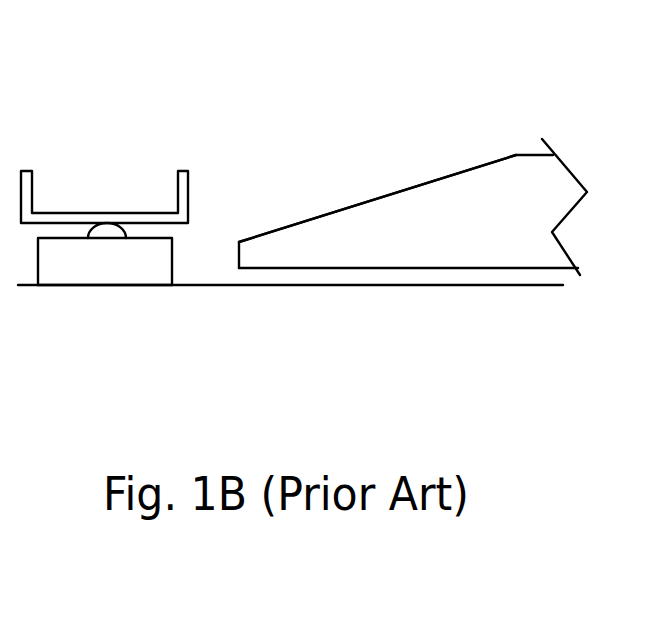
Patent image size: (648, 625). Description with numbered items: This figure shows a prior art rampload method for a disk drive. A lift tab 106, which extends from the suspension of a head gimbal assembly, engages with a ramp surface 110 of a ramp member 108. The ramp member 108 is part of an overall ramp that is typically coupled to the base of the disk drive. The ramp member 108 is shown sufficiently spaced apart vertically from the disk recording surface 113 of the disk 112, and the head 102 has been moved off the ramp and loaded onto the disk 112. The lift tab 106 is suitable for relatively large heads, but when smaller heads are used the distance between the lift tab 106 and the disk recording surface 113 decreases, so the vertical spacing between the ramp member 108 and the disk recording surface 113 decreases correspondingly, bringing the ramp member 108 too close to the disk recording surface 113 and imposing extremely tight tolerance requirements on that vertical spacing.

The head 102 is at (53, 268).
The lift tab 106 is at (140, 212).
The ramp member 108 is at (425, 218).
The ramp surface 110 is at (362, 197).
The disk 112 is at (399, 323).
The disk recording surface 113 is at (266, 276).